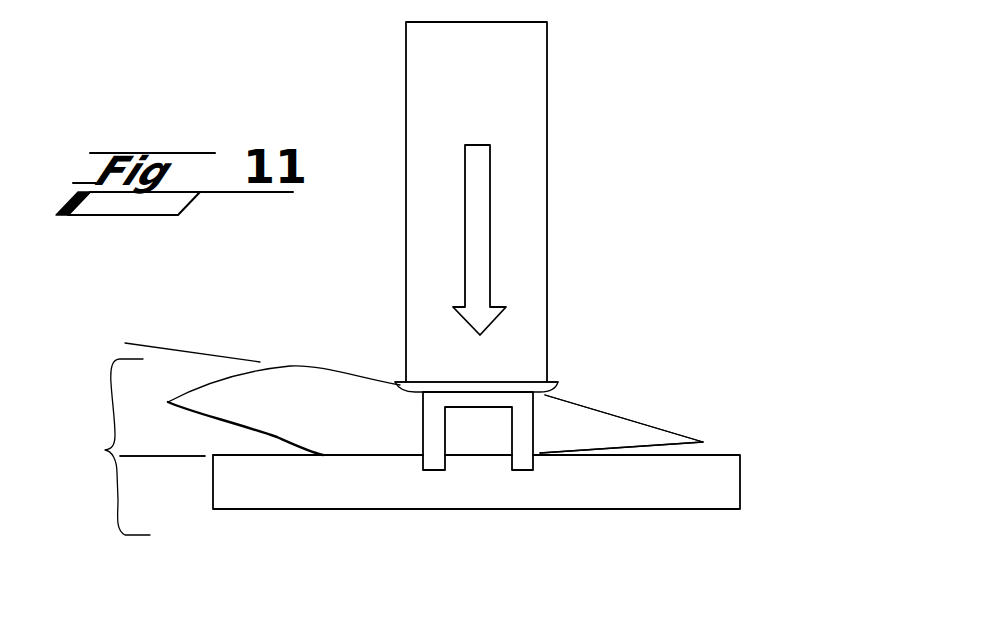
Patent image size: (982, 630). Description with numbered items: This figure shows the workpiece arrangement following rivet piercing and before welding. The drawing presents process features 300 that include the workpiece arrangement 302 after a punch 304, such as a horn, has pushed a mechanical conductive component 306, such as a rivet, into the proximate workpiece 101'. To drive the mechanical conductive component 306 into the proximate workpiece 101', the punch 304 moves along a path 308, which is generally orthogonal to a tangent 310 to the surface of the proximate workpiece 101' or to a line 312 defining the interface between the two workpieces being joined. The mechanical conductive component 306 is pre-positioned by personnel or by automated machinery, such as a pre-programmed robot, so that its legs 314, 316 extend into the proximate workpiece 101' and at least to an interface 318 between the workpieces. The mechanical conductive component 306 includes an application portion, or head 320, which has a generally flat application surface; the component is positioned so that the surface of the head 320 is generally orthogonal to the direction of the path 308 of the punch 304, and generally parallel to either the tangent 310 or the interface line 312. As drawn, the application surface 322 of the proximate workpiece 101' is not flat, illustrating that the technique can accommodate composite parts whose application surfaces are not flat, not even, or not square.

The process features 300 is at (663, 198).
The workpiece arrangement 302 is at (105, 450).
The punch 304 is at (406, 107).
The mechanical conductive component 306 is at (423, 400).
The path 308 is at (482, 192).
The tangent 310 is at (157, 347).
The line 312 is at (157, 457).
The leg 314 is at (423, 457).
The leg 316 is at (533, 440).
The interface 318 is at (710, 447).
The head 320 is at (432, 383).
The application surface 322 is at (668, 427).
The proximate workpiece 101' is at (624, 363).